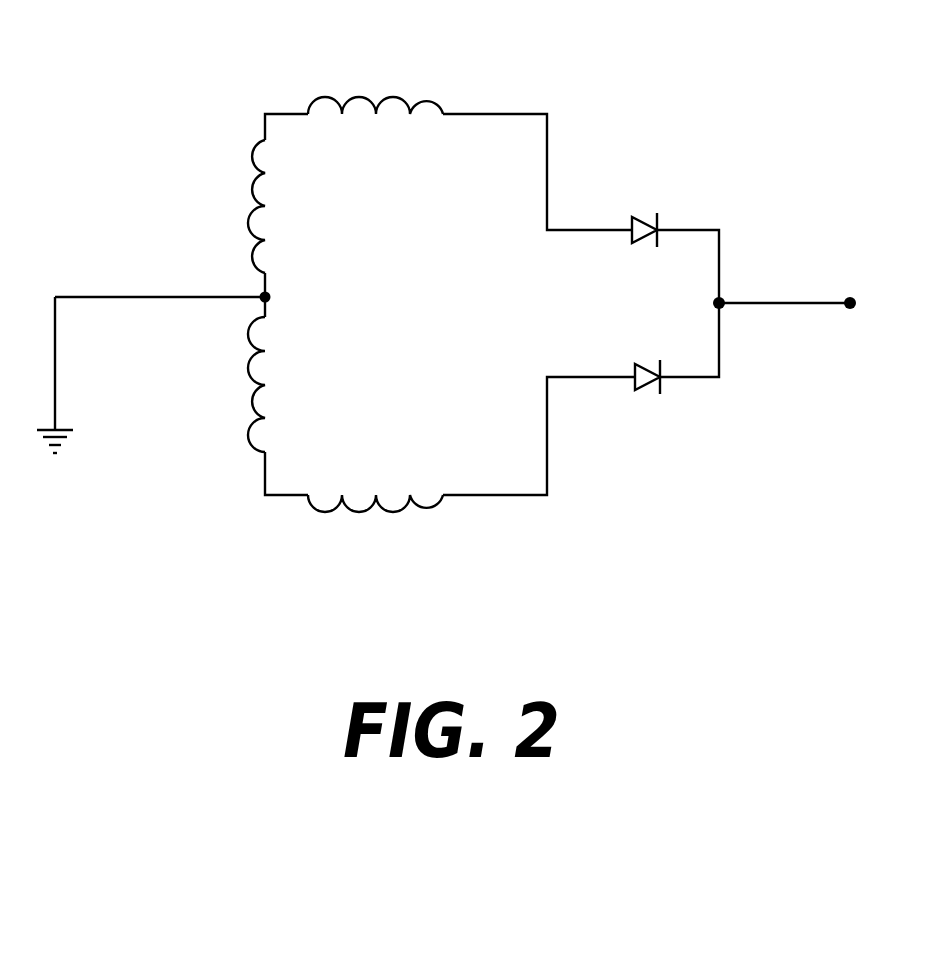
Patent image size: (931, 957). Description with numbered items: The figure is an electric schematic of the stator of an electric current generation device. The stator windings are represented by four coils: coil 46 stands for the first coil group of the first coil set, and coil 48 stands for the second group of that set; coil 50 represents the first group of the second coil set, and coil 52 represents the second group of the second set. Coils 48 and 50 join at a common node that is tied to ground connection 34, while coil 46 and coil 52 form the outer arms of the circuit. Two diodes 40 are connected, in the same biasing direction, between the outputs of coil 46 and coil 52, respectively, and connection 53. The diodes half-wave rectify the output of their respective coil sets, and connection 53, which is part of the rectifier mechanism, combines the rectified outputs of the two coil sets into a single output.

The ground connection 34 is at (270, 297).
The diodes 40 is at (642, 214).
The coil 46 is at (390, 98).
The coil 48 is at (250, 196).
The coil 50 is at (252, 440).
The coil 52 is at (387, 510).
The connection 53 is at (713, 308).